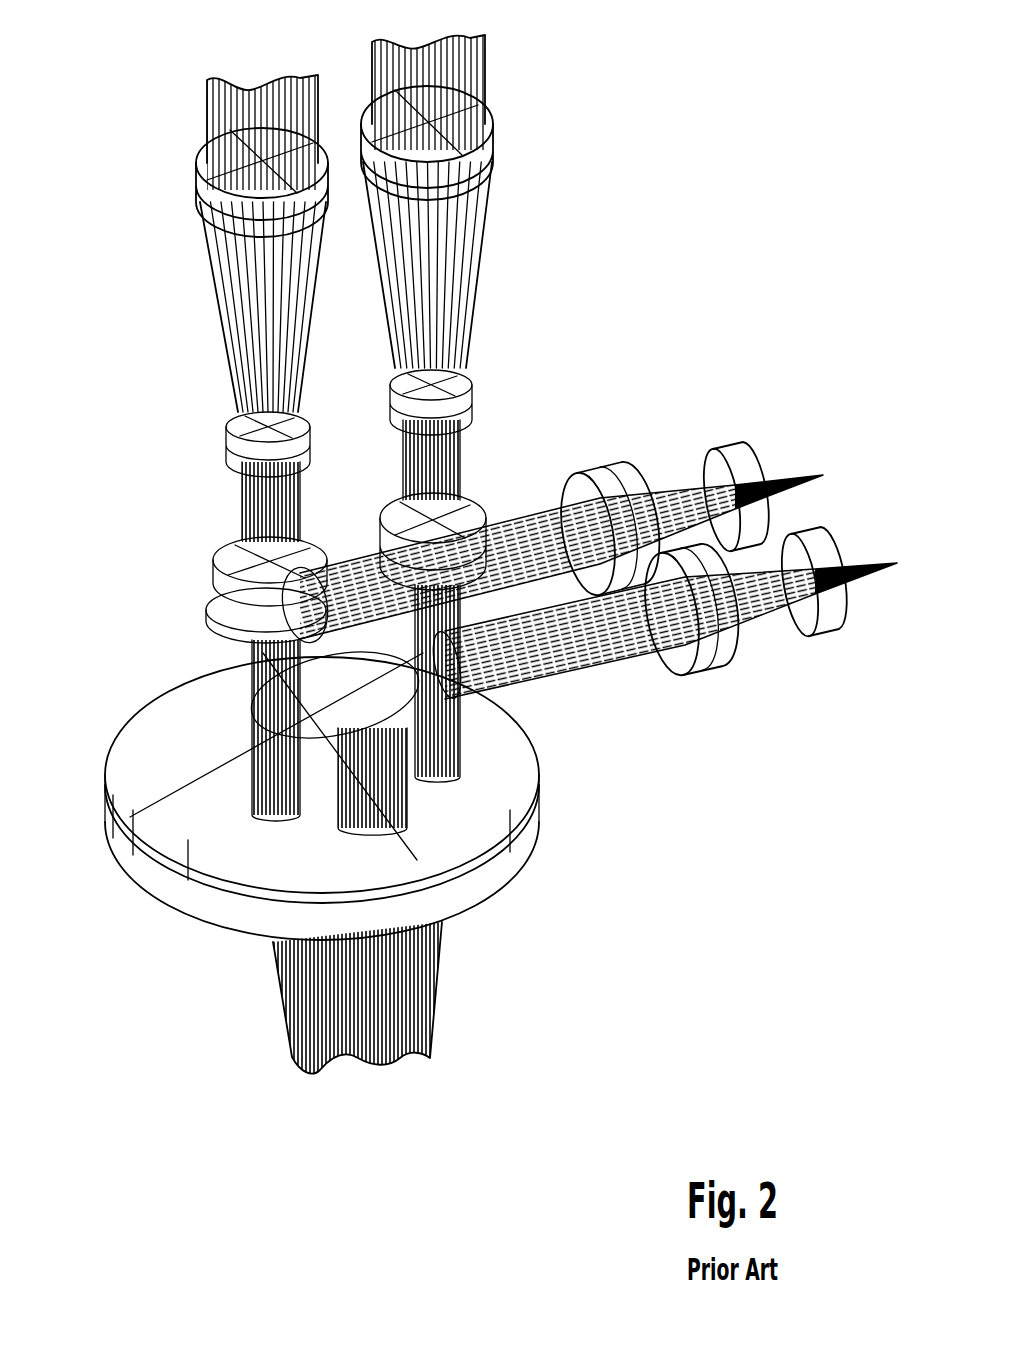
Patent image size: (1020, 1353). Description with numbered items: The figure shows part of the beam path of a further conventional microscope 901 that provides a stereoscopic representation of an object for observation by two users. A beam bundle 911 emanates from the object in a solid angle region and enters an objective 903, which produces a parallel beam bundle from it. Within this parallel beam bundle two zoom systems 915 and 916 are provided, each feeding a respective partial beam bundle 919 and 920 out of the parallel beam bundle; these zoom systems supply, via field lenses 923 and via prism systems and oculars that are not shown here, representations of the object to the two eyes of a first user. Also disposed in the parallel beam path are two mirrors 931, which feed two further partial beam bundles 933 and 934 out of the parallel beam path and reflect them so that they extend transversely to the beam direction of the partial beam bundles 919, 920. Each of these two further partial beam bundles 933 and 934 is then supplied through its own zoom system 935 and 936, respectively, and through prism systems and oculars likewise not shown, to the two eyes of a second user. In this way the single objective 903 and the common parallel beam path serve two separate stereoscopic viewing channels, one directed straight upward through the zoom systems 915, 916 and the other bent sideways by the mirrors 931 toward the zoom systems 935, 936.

The conventional microscope 901 is at (820, 240).
The objective 903 is at (537, 836).
The beam bundle 911 is at (437, 988).
The zoom system 915 is at (192, 424).
The zoom system 916 is at (486, 503).
The partial beam bundle 919 is at (253, 713).
The partial beam bundle 920 is at (522, 792).
The field lenses 923 is at (201, 203).
The mirrors 931 is at (500, 700).
The partial beam bundle 933 is at (603, 663).
The partial beam bundle 934 is at (522, 523).
The zoom system 935 is at (850, 647).
The zoom system 936 is at (730, 437).